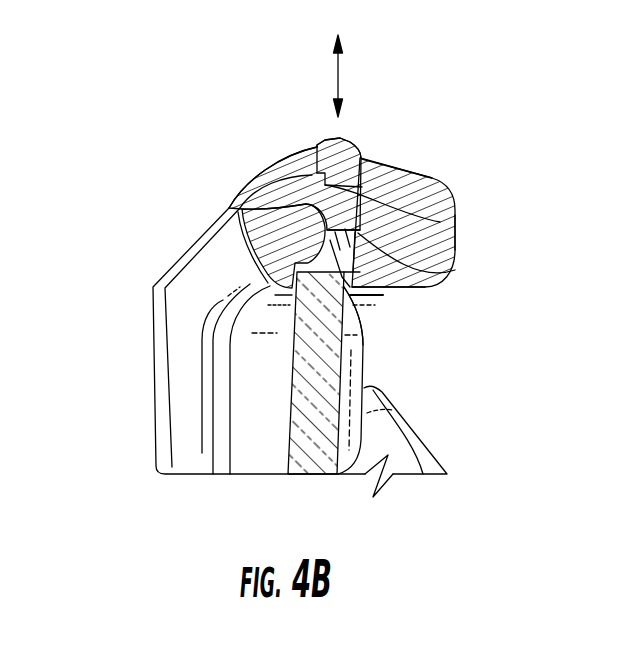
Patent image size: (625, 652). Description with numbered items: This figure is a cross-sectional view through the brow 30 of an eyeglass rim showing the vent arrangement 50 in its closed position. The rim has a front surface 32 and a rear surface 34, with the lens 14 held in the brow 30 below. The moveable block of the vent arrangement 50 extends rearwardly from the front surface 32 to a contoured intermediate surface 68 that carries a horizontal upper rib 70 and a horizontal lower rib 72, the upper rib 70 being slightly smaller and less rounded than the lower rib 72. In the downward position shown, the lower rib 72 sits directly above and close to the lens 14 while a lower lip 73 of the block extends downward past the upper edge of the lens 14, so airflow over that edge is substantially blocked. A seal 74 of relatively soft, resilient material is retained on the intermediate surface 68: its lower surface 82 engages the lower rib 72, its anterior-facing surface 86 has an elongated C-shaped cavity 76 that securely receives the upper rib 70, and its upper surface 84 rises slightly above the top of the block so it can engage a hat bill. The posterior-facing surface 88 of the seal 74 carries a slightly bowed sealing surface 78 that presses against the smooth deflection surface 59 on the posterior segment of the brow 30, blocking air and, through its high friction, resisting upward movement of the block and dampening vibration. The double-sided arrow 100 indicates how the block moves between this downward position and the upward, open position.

The lens 14 is at (315, 460).
The brow 30 is at (437, 181).
The front surface 32 is at (270, 167).
The rear surface 34 is at (455, 238).
The vent arrangement 50 is at (134, 149).
The deflection surface 59 is at (362, 252).
The intermediate surface 68 is at (418, 288).
The upper rib 70 is at (357, 146).
The lower rib 72 is at (353, 255).
The lower lip 73 is at (250, 297).
The seal 74 is at (350, 143).
The C-shaped cavity 76 is at (258, 187).
The sealing surface 78 is at (400, 162).
The lower surface 82 is at (455, 270).
The upper surface 84 is at (330, 142).
The anterior-facing surface 86 is at (242, 209).
The posterior-facing surface 88 is at (440, 222).
The double-sided arrow 100 is at (338, 73).